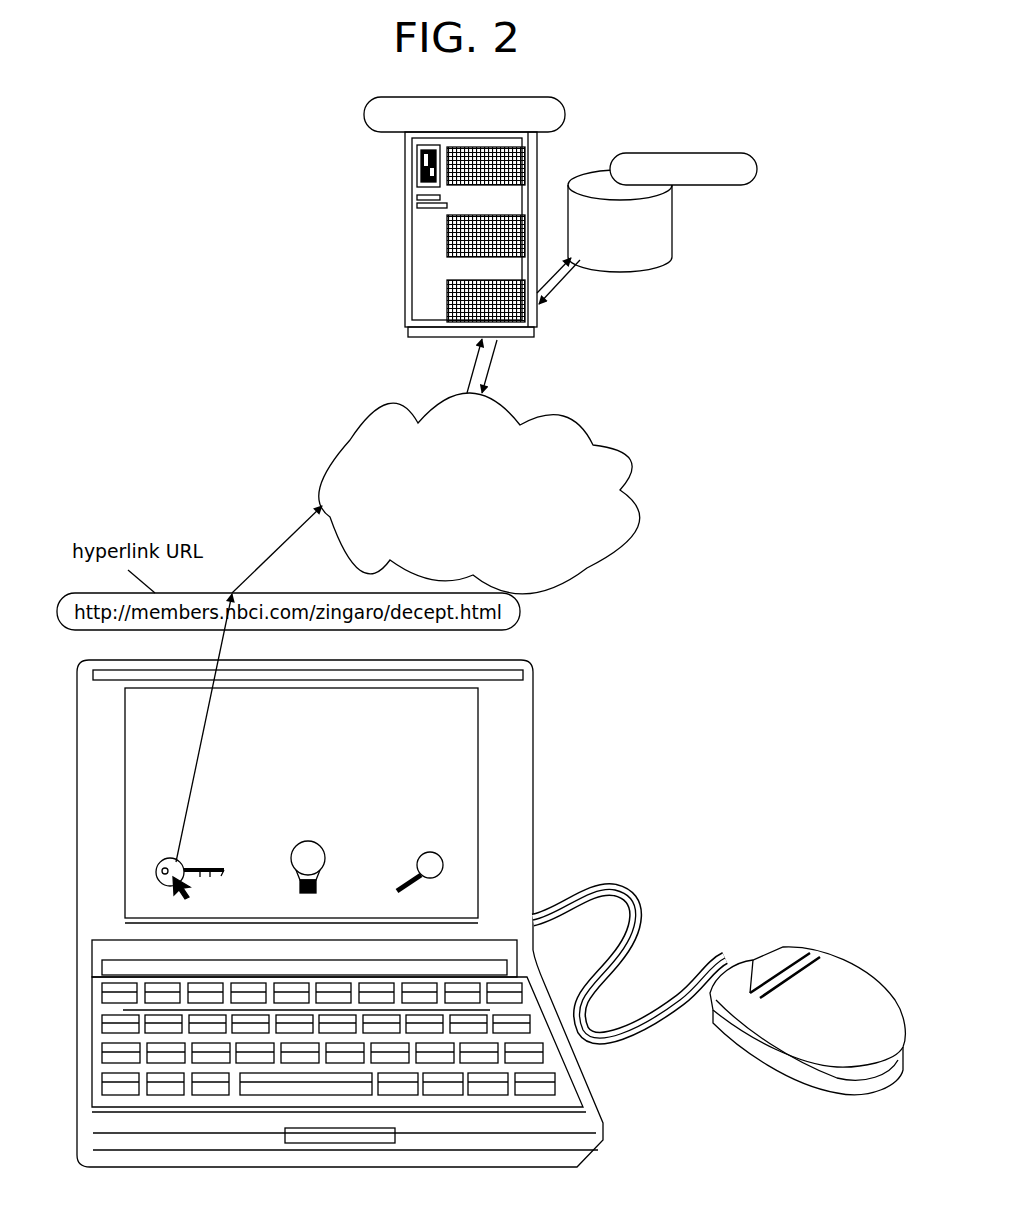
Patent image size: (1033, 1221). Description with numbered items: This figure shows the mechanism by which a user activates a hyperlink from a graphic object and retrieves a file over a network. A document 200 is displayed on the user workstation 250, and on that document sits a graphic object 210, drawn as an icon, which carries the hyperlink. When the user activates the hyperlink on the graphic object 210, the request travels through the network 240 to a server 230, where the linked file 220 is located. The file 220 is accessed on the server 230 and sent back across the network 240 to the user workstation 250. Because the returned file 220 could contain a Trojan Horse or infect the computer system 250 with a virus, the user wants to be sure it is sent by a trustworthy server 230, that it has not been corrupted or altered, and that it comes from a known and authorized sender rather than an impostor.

The document 200 is at (470, 743).
The graphic object 210 is at (188, 863).
The file 220 is at (757, 170).
The server 230 is at (565, 114).
The network 240 is at (479, 493).
The user workstation 250 is at (77, 688).